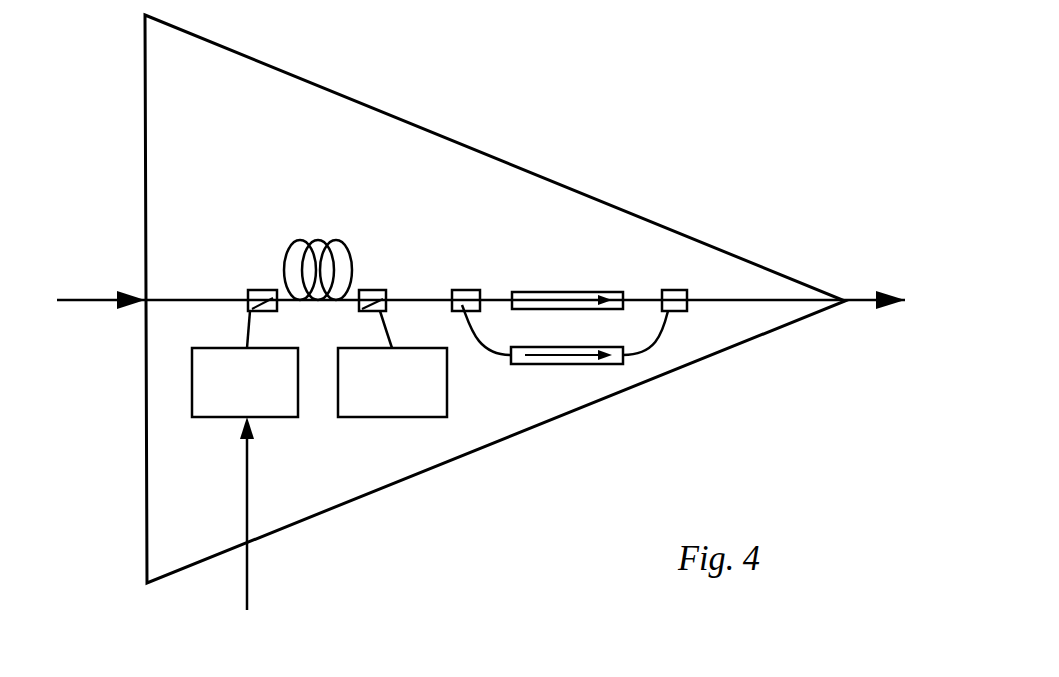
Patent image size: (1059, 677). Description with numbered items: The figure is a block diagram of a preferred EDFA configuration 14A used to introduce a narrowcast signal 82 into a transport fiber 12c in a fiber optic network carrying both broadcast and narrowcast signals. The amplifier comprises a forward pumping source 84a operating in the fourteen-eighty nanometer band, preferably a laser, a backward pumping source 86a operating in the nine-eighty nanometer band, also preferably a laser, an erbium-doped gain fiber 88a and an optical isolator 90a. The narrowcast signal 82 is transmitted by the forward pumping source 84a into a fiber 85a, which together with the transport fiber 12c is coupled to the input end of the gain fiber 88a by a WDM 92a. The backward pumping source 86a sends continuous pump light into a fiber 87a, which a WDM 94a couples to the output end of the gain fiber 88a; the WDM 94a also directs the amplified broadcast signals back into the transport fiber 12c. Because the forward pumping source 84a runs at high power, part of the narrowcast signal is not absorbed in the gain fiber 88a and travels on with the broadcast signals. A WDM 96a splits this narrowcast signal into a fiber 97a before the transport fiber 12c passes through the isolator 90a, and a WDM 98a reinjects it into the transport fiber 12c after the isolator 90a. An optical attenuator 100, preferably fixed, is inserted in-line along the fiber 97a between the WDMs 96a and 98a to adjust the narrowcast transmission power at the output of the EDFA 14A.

The EDFA configuration 14A is at (510, 162).
The transport fiber 12c is at (68, 302).
The WDM 92a is at (250, 290).
The fiber 85a is at (249, 323).
The erbium-doped gain fiber 88a is at (318, 240).
The WDM 94a is at (378, 290).
The fiber 87a is at (389, 332).
The WDM 96a is at (456, 305).
The optical isolator 90a is at (510, 292).
The fiber 97a is at (482, 352).
The optical attenuator 100 is at (622, 362).
The WDM 98a is at (680, 311).
The 1480 nm forward pumping source 84a is at (203, 418).
The 980 nm backward pumping source 86a is at (383, 418).
The narrowcast signal 82 is at (250, 578).